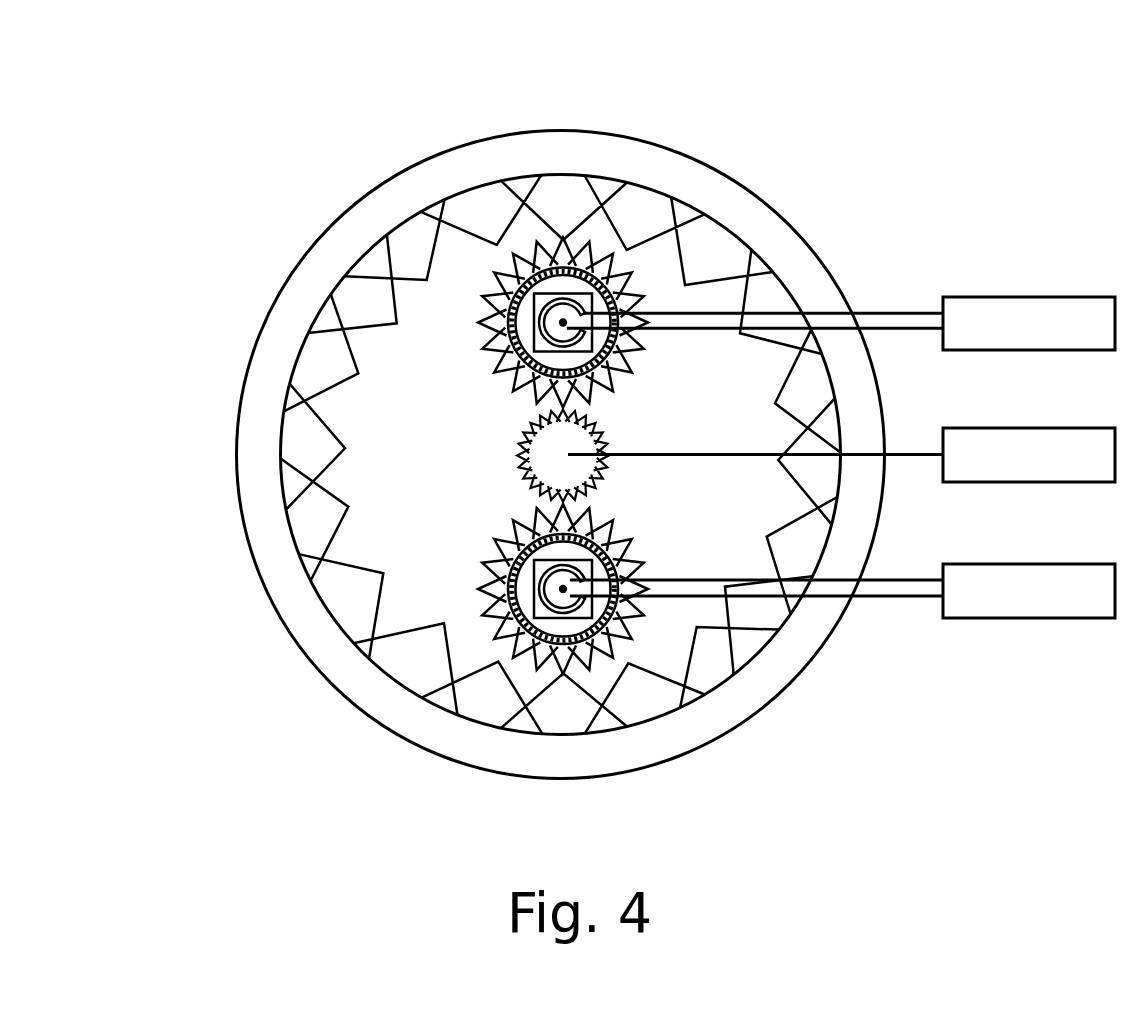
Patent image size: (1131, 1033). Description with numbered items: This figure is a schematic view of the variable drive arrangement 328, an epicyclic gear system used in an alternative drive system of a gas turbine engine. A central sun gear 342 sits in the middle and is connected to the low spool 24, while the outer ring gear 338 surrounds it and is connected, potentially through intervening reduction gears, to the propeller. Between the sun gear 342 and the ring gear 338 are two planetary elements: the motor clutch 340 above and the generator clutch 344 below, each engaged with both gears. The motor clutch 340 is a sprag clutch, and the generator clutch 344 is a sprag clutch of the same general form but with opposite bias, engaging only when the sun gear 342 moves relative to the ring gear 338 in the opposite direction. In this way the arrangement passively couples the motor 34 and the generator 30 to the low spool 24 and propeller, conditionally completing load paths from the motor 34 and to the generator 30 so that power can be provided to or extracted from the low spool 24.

The variable drive arrangement 328 is at (805, 140).
The ring gear 338 is at (478, 742).
The motor clutch 340 is at (565, 285).
The sun gear 342 is at (553, 468).
The generator clutch 344 is at (493, 628).
The motor 34 is at (1097, 335).
The low spool 24 is at (1100, 467).
The generator 30 is at (1102, 603).